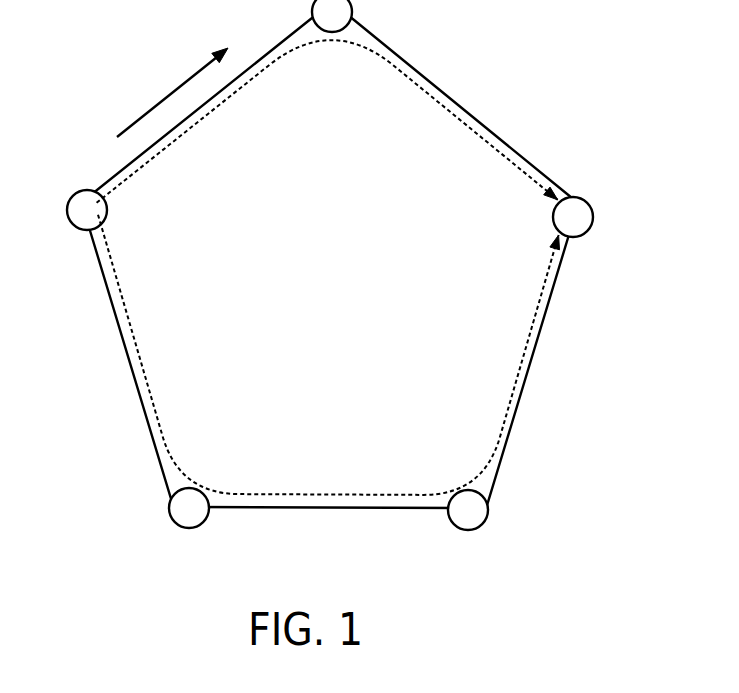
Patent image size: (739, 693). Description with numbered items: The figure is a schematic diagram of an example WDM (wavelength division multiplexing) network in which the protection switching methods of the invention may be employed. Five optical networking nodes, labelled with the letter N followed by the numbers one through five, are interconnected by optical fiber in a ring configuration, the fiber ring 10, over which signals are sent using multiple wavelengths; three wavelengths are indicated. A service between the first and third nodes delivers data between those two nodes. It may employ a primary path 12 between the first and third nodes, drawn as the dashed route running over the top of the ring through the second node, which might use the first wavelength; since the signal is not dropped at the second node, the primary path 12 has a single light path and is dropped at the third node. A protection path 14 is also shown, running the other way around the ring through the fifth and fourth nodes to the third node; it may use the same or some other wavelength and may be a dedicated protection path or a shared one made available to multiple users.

The fiber ring 10 is at (465, 108).
The primary path 12 is at (197, 121).
The protection path 14 is at (157, 417).